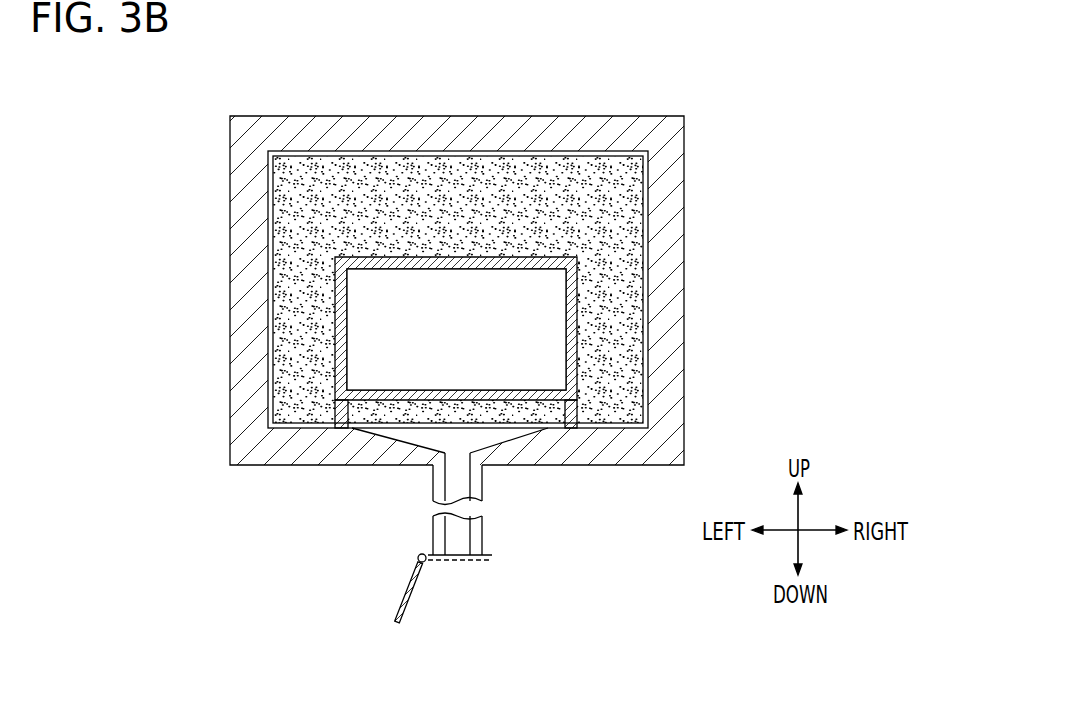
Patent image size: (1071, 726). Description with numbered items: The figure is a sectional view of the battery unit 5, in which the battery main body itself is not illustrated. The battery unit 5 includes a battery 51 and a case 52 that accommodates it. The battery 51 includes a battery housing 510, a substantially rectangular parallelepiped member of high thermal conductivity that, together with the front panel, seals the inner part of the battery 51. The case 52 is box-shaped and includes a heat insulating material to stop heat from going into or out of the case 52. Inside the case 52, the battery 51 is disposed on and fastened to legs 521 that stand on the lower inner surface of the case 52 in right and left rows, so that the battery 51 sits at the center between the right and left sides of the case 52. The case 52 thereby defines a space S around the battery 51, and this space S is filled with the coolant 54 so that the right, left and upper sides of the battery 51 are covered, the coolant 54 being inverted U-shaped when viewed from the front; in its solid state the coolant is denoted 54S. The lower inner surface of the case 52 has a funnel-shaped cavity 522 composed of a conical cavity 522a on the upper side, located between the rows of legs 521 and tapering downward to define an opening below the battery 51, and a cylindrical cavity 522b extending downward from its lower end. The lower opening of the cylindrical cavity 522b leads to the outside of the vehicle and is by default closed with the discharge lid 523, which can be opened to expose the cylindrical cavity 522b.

The battery unit 5 is at (684, 75).
The case 52 is at (523, 127).
The coolant 54 is at (551, 275).
The coolant in a solid state 54S is at (619, 196).
The space S is at (345, 197).
The battery 51 is at (453, 311).
The battery housing 510 is at (345, 325).
The legs 521 is at (340, 407).
The cavity 522 is at (353, 494).
The conical cavity 522a is at (422, 446).
The cylindrical cavity 522b is at (458, 485).
The discharge lid 523 is at (403, 597).